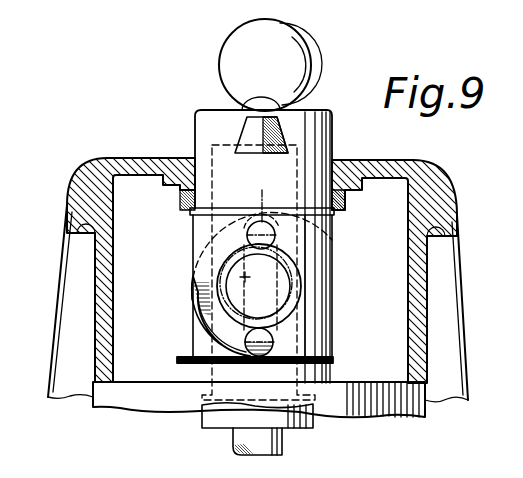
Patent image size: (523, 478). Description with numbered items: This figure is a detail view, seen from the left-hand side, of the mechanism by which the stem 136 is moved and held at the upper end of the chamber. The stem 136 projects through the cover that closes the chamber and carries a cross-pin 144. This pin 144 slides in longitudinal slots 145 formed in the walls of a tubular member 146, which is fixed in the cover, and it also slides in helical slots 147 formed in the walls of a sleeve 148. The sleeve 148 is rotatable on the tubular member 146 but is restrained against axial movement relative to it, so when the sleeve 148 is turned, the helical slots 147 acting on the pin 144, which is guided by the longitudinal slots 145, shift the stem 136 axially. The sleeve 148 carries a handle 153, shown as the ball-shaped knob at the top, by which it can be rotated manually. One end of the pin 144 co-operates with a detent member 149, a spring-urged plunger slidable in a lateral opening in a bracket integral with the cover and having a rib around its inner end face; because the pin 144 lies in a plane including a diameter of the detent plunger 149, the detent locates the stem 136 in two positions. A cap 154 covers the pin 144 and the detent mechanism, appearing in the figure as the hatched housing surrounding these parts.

The stem 136 is at (250, 436).
The cross-pin 144 is at (264, 222).
The longitudinal slots 145 is at (200, 264).
The tubular member 146 is at (330, 284).
The helical slots 147 is at (197, 316).
The sleeve 148 is at (205, 131).
The detent member 149 is at (300, 270).
The handle 153 is at (297, 55).
The cap 154 is at (381, 160).